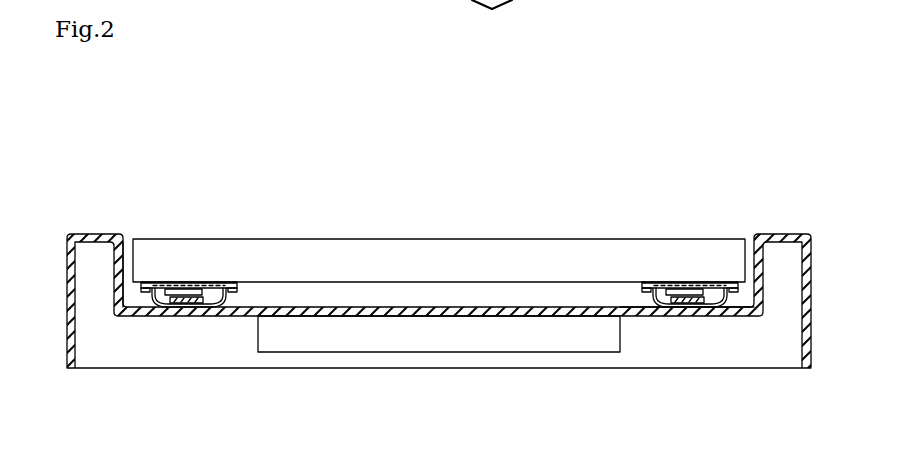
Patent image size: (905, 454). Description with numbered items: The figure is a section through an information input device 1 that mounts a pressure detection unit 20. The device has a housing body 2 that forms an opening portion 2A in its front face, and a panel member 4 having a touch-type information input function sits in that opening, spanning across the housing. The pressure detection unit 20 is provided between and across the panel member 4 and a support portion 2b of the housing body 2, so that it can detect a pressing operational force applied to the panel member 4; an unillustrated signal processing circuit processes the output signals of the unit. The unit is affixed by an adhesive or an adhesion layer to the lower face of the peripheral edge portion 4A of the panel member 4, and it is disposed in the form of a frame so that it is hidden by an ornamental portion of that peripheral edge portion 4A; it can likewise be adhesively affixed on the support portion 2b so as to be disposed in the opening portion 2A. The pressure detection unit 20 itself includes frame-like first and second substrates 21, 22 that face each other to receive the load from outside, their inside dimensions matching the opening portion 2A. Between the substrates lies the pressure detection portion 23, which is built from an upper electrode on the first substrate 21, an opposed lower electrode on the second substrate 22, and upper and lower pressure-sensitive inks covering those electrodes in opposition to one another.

The information input device 1 is at (177, 132).
The housing body 2 is at (98, 233).
The opening portion 2A is at (127, 246).
The support portion 2b is at (632, 303).
The panel member 4 is at (445, 249).
The peripheral edge portion 4A is at (212, 273).
The pressure detection unit 20 is at (243, 299).
The first substrate 21 is at (169, 283).
The second substrate 22 is at (227, 303).
The pressure detection portion 23 is at (180, 308).